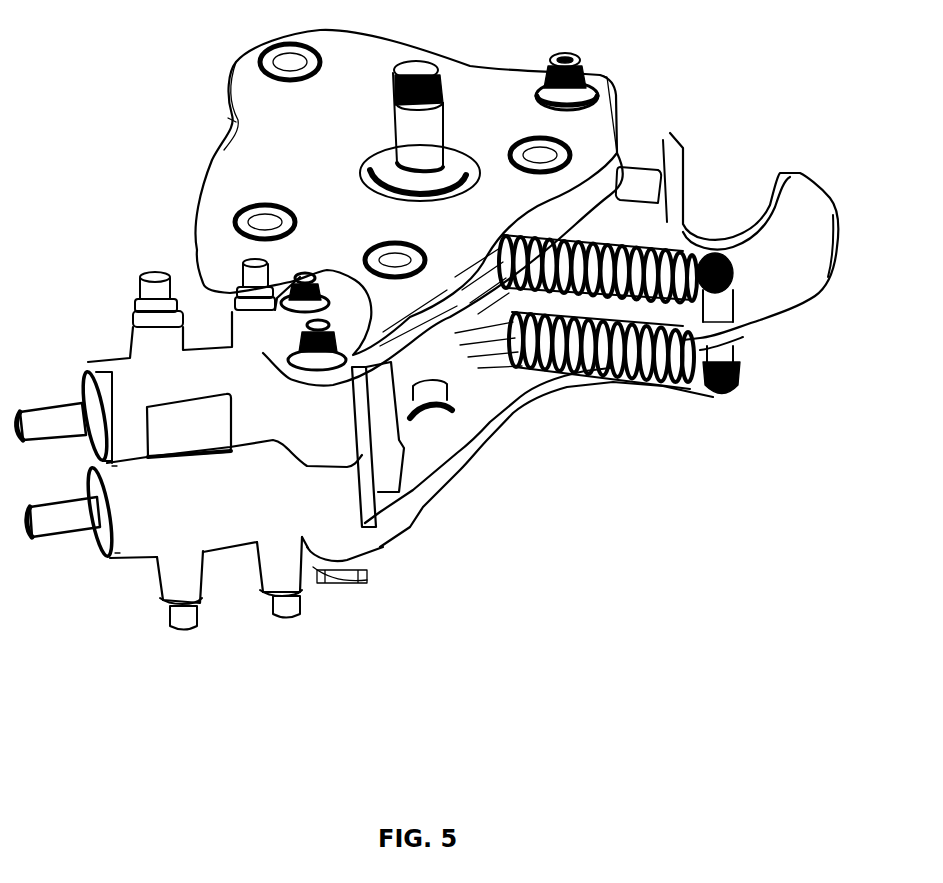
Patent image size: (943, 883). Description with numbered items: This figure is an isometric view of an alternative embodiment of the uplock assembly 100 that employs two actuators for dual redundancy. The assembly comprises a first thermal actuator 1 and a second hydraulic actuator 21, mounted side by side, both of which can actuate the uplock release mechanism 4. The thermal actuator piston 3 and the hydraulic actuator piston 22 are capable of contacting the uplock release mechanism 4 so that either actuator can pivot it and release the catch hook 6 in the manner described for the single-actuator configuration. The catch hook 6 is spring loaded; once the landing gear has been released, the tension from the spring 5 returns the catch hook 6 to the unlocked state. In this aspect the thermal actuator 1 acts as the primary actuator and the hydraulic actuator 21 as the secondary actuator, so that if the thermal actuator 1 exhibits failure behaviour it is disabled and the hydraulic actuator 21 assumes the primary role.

The uplock assembly 100 is at (103, 197).
The thermal actuator 1 is at (130, 383).
The piston 3 is at (62, 400).
The hydraulic actuator 21 is at (220, 513).
The hydraulic actuator piston 22 is at (66, 540).
The uplock release mechanism 4 is at (407, 450).
The spring 5 is at (722, 405).
The catch hook 6 is at (810, 318).